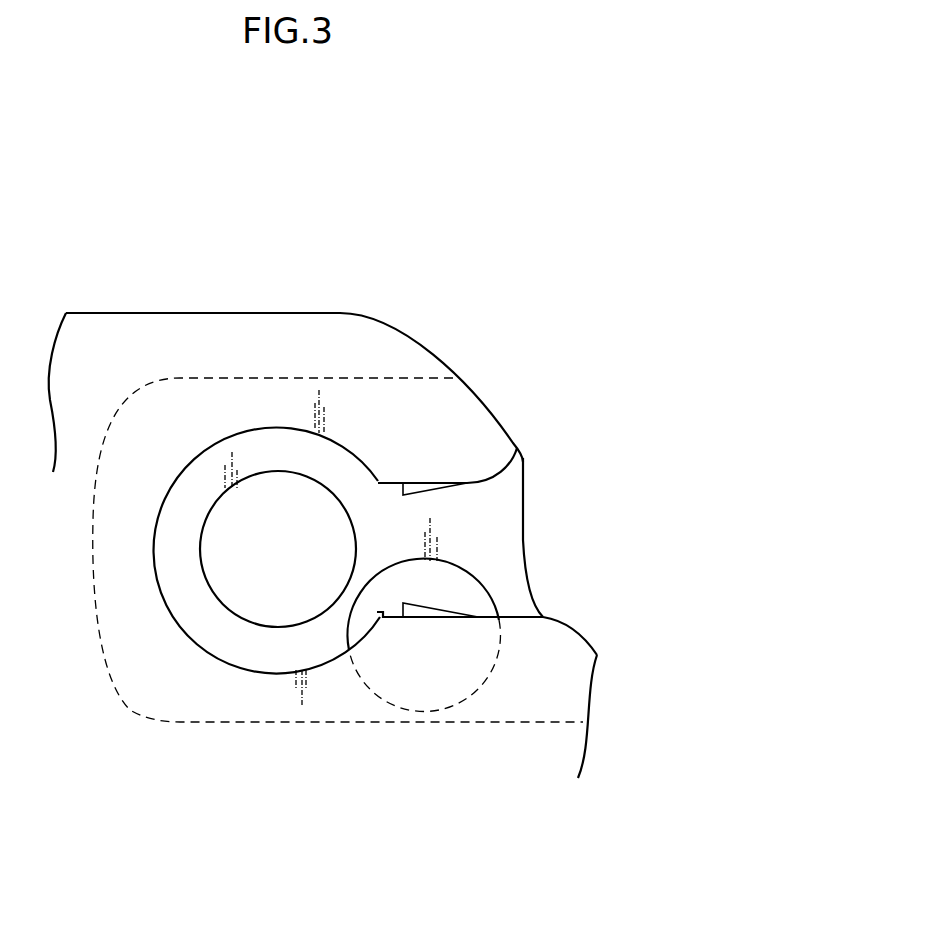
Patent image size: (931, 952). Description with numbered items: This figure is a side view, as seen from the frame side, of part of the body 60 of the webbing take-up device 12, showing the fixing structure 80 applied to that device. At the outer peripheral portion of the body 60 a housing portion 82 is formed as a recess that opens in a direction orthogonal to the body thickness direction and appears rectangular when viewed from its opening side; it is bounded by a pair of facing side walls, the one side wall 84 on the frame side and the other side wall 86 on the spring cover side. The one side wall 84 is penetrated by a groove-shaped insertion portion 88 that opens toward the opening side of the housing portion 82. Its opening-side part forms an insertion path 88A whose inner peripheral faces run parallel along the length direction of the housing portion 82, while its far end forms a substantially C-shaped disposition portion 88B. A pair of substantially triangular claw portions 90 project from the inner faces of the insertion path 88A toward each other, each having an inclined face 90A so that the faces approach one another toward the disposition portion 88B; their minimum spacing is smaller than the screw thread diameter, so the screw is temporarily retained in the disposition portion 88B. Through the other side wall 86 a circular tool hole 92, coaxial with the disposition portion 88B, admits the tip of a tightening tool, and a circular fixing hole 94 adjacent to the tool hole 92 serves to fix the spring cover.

The webbing take-up device 12 is at (468, 163).
The body 60 is at (358, 312).
The fixing structure 80 is at (605, 440).
The housing portion 82 is at (156, 395).
The one side wall 84 is at (245, 398).
The other side wall 86 is at (507, 482).
The insertion portion 88 is at (360, 840).
The insertion path 88A is at (388, 610).
The disposition portion 88B is at (243, 662).
The claw portion 90 is at (443, 490).
The inclined face 90A is at (420, 490).
The tool hole 92 is at (214, 597).
The fixing hole 94 is at (462, 703).